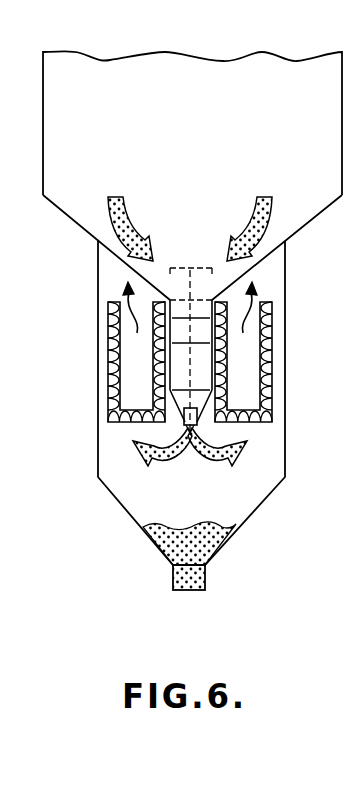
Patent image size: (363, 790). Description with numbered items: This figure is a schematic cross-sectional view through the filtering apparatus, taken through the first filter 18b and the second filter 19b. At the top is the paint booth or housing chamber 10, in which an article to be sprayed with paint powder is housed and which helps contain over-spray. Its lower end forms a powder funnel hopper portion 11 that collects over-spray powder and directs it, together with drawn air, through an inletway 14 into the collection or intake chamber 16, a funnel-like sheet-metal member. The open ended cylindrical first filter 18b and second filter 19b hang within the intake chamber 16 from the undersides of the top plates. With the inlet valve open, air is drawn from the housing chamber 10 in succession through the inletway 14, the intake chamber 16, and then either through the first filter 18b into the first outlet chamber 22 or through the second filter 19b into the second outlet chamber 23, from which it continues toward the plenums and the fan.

The paint booth or housing chamber 10 is at (210, 143).
The powder funnel hopper portion 11 is at (327, 204).
The inletway 14 is at (203, 392).
The collection or intake chamber 16 is at (207, 499).
The first filter 18b is at (112, 358).
The second filter 19b is at (268, 358).
The first outlet chamber 22 is at (100, 270).
The second outlet chamber 23 is at (280, 270).